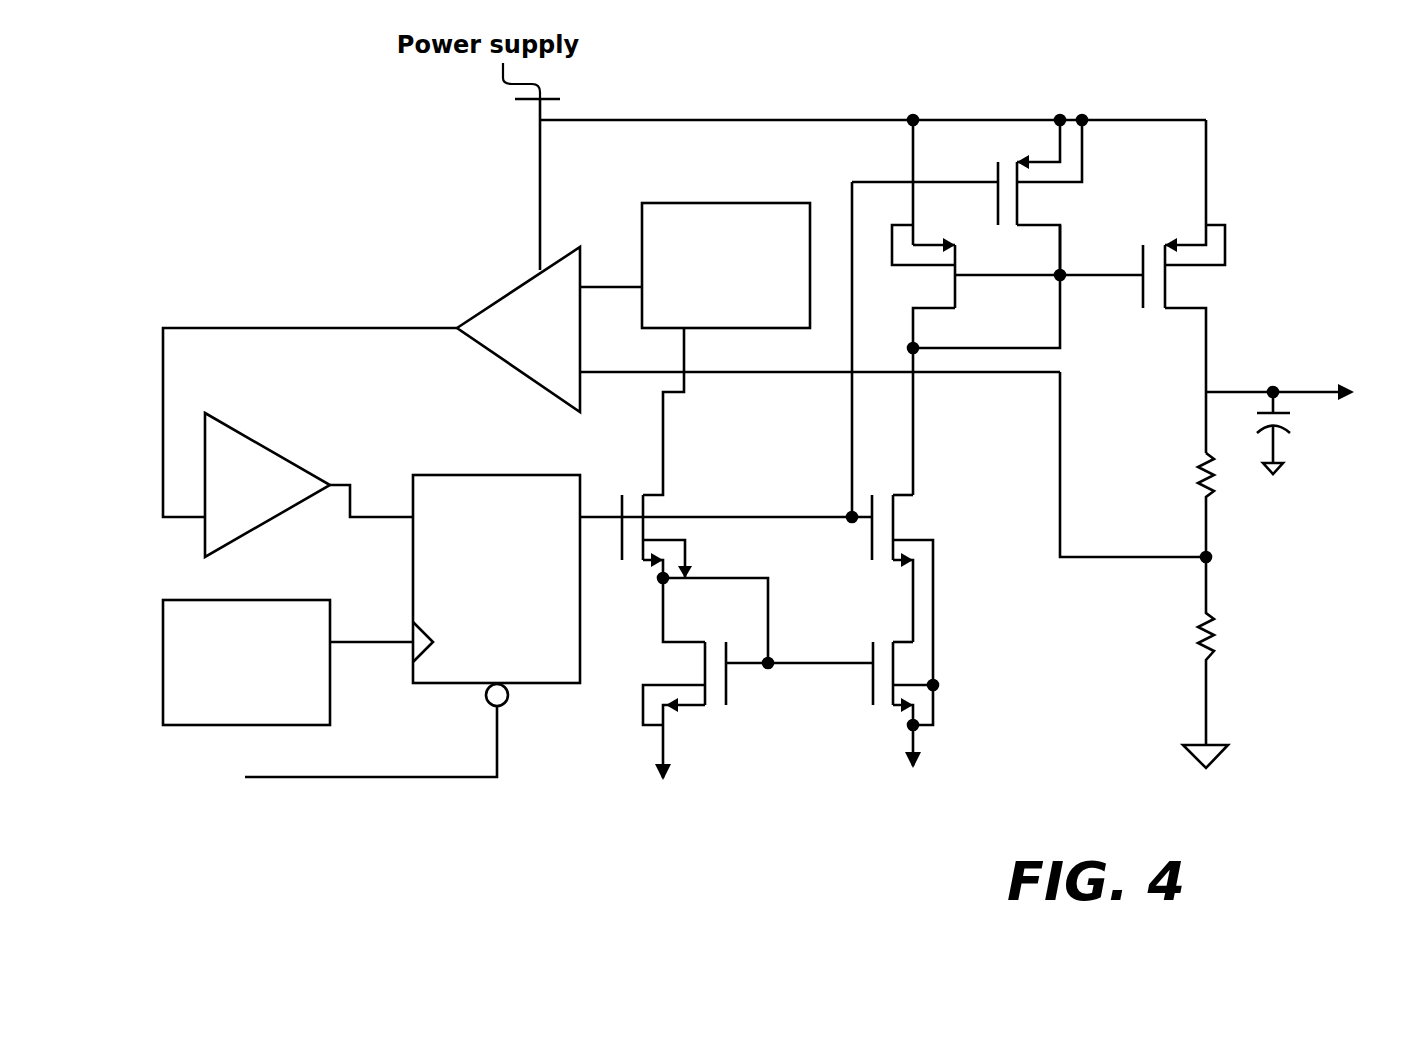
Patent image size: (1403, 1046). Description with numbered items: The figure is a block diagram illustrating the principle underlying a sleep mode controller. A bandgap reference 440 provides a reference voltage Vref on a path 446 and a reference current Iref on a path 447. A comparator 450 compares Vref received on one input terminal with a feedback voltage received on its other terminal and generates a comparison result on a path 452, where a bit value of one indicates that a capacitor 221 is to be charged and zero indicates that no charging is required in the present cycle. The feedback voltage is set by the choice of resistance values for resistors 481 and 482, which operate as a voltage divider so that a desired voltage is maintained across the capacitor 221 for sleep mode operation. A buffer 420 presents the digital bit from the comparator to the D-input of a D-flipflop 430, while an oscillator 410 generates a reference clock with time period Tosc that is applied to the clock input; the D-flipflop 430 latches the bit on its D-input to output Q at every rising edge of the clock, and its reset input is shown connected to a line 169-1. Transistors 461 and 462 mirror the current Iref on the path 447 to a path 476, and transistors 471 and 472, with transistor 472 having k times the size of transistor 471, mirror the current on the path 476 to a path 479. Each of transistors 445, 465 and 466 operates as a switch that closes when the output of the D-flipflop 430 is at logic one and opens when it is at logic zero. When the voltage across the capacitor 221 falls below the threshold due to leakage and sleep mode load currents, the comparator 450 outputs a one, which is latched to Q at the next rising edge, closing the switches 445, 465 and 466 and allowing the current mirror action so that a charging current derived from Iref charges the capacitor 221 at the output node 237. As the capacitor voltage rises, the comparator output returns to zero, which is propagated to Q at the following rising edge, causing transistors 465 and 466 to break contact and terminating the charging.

The reset signal line 169-1 is at (340, 777).
The capacitor 221 is at (1292, 425).
The output voltage node 237 is at (1335, 385).
The oscillator 410 is at (223, 713).
The buffer 420 is at (262, 527).
The D-flipflop 430 is at (473, 628).
The bandgap reference 440 is at (702, 310).
The transistor 445 is at (673, 528).
The path 446 is at (624, 287).
The path 447 is at (663, 420).
The comparator 450 is at (518, 366).
The path 452 is at (265, 328).
The transistor 461 is at (717, 705).
The transistor 462 is at (935, 685).
The transistor 465 is at (920, 518).
The transistor 466 is at (1060, 205).
The transistor 471 is at (960, 285).
The transistor 472 is at (1205, 295).
The path 476 is at (913, 440).
The path 479 is at (1206, 172).
The resistor 481 is at (1215, 478).
The resistor 482 is at (1215, 640).